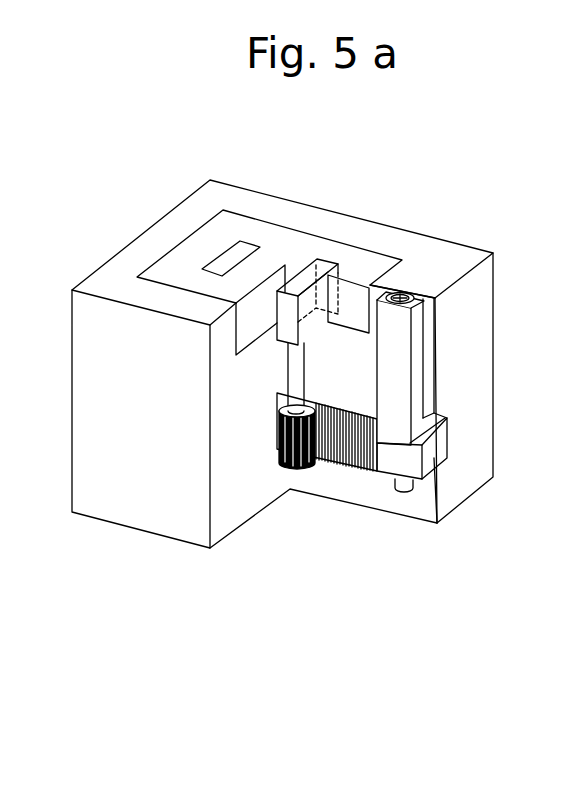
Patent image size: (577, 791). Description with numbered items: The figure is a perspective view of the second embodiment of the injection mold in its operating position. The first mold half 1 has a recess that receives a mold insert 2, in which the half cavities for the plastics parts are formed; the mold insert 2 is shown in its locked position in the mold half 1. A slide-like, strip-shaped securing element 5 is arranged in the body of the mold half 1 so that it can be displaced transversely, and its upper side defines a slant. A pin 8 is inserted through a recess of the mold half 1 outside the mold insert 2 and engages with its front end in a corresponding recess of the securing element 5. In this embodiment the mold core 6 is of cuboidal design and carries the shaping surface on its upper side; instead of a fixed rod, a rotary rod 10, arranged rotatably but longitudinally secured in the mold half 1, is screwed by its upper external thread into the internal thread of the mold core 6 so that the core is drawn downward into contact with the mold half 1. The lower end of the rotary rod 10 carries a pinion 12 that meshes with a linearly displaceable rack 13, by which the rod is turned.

The mold half 1 is at (197, 523).
The mold insert 2 is at (163, 267).
The securing element 5 is at (433, 456).
The mold core 6 is at (233, 262).
The pin 8 is at (397, 337).
The rotary rod 10 is at (290, 373).
The pinion 12 is at (293, 468).
The rack 13 is at (353, 467).